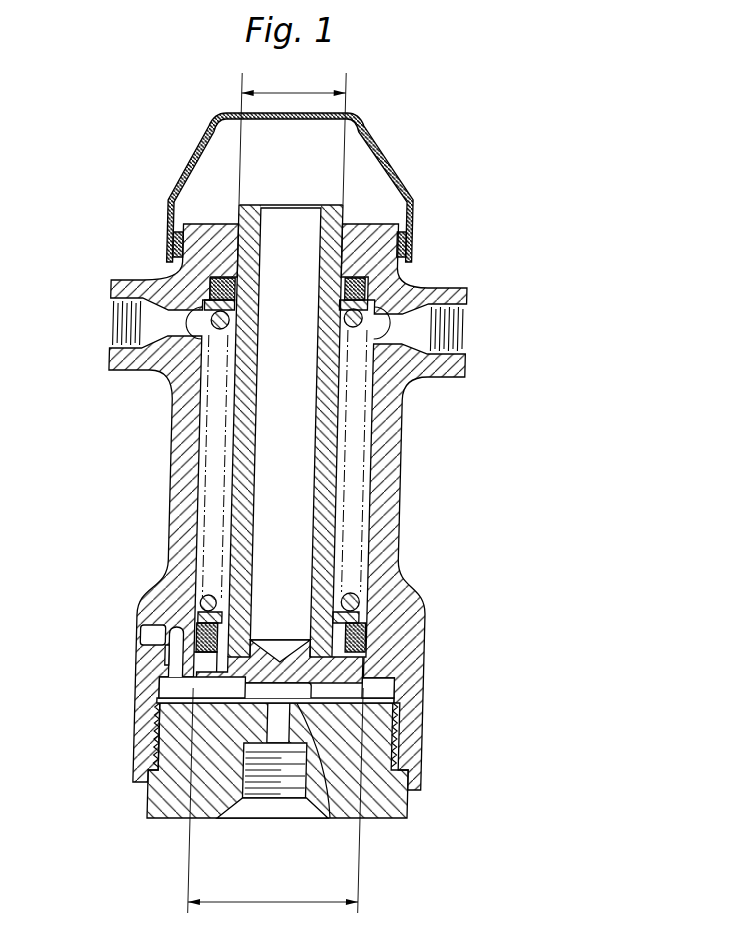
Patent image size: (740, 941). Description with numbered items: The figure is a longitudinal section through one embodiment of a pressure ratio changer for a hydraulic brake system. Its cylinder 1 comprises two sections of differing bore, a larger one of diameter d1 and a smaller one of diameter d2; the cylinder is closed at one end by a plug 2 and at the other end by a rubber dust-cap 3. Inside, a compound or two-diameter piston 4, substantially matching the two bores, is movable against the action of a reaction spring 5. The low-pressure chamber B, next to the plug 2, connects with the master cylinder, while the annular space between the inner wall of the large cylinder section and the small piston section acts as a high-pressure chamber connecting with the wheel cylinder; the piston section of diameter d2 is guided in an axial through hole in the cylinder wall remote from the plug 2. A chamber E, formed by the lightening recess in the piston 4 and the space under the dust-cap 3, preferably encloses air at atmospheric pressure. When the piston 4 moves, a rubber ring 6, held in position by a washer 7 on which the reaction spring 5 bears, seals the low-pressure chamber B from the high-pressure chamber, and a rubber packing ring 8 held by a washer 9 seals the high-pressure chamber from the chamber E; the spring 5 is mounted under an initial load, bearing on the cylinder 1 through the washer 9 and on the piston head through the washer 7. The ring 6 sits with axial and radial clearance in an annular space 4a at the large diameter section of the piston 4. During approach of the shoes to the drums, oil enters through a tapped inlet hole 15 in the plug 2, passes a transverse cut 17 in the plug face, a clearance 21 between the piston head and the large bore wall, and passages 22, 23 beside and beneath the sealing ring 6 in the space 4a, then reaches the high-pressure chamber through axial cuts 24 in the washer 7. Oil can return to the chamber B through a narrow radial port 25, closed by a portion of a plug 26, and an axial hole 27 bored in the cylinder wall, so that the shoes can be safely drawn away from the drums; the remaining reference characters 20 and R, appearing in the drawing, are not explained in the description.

The cylinder 1 is at (400, 420).
The plug 2 is at (396, 747).
The rubber dust-cap 3 is at (401, 170).
The compound piston 4 is at (345, 542).
The annular space 4a is at (381, 658).
The reaction spring 5 is at (361, 458).
The rubber ring 6 is at (385, 623).
The washer 7 is at (398, 603).
The rubber packing ring 8 is at (370, 288).
The washer 9 is at (372, 308).
The tapped inlet hole 15 is at (312, 783).
The transverse cut 17 is at (350, 818).
The threaded port 20 is at (458, 343).
The clearance 21 is at (187, 685).
The passage 22 is at (180, 672).
The passage 23 is at (237, 635).
The axial cuts 24 is at (226, 603).
The narrow radial port 25 is at (220, 628).
The plug 26 is at (166, 632).
The axial hole 27 is at (188, 650).
The low-pressure chamber B is at (395, 693).
The chamber E is at (181, 237).
The annular chamber R is at (377, 497).
The cylinder section diameter d1 is at (275, 800).
The cylinder section diameter d2 is at (292, 137).